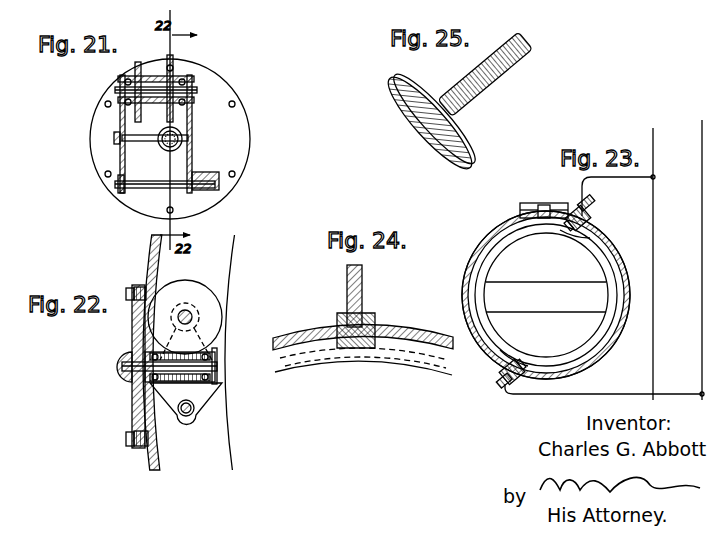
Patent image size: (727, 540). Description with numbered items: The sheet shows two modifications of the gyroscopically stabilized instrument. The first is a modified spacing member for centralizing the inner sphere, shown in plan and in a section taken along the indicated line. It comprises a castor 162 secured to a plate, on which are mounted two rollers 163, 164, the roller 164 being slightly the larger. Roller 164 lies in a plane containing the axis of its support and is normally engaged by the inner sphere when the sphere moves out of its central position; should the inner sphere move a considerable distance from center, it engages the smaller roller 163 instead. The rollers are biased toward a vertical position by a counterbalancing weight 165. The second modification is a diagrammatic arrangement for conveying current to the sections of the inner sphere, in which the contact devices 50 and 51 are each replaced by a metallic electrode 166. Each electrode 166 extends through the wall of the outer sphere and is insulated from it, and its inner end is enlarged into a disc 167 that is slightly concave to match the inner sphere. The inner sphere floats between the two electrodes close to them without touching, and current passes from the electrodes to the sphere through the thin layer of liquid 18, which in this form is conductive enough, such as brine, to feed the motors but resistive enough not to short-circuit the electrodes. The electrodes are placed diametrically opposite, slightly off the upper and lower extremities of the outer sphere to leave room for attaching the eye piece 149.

In FIG. 24, the liquid 18 is at (422, 345).
In FIG. 23, the liquid 18 is at (546, 295).
In FIG. 23, the contact device 50 is at (595, 229).
In FIG. 23, the contact device 51 is at (516, 382).
In FIG. 23, the eye piece 149 is at (535, 204).
In FIG. 21, the castor 162 is at (240, 142).
In FIG. 22, the castor 162 is at (133, 328).
In FIG. 21, the roller 163 is at (138, 61).
In FIG. 21, the roller 164 is at (175, 57).
In FIG. 22, the roller 164 is at (190, 287).
In FIG. 21, the counterbalancing weight 165 is at (222, 182).
In FIG. 24, the metallic electrode 166 is at (362, 291).
In FIG. 25, the metallic electrode 166 is at (492, 88).
In FIG. 23, the metallic electrode 166 is at (586, 214).
In FIG. 24, the disc 167 is at (380, 345).
In FIG. 25, the disc 167 is at (470, 144).
In FIG. 23, the disc 167 is at (500, 362).